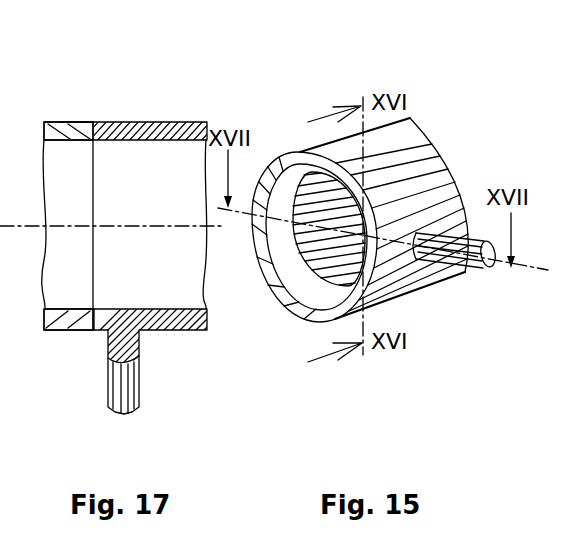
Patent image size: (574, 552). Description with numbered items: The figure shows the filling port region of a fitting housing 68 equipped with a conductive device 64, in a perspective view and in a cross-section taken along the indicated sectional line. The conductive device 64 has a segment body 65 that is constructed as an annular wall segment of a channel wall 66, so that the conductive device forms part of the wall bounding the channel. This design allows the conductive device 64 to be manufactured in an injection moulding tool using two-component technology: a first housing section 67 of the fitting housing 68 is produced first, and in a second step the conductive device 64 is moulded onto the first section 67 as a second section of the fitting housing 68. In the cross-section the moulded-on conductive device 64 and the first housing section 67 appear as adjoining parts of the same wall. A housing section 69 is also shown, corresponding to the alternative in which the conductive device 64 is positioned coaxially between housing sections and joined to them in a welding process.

In FIG. 17, the conductive device 64 is at (205, 115).
In FIG. 17, the segment body 65 is at (145, 120).
In FIG. 15, the segment body 65 is at (425, 147).
In FIG. 17, the channel wall 66 is at (50, 116).
In FIG. 15, the channel wall 66 is at (312, 151).
In FIG. 17, the first housing section 67 is at (57, 133).
In FIG. 17, the fitting housing 68 is at (69, 65).
In FIG. 15, the housing section 69 is at (440, 213).